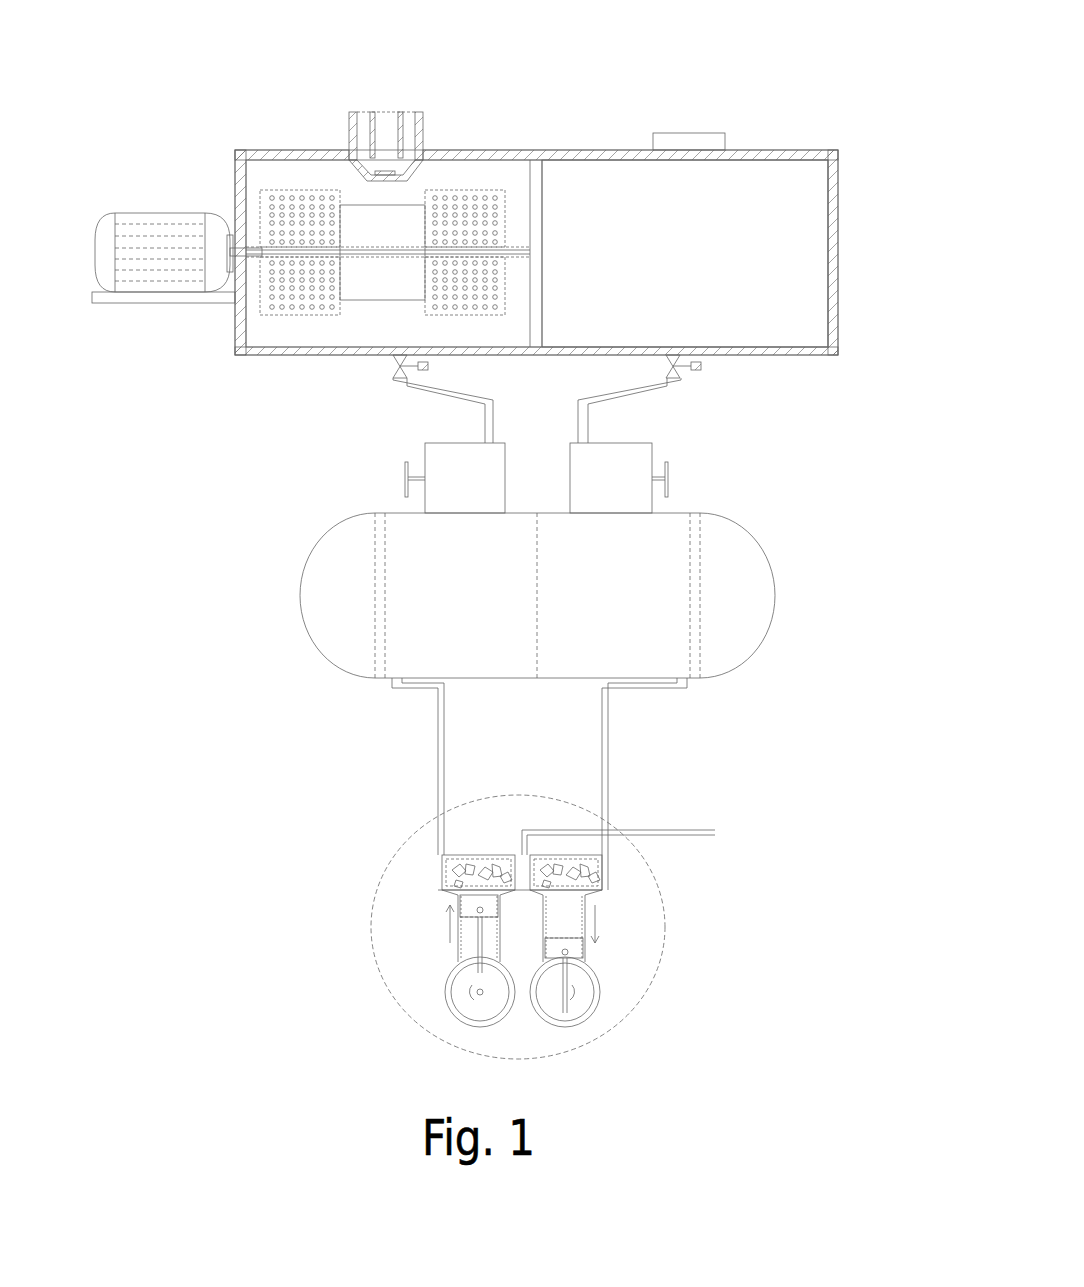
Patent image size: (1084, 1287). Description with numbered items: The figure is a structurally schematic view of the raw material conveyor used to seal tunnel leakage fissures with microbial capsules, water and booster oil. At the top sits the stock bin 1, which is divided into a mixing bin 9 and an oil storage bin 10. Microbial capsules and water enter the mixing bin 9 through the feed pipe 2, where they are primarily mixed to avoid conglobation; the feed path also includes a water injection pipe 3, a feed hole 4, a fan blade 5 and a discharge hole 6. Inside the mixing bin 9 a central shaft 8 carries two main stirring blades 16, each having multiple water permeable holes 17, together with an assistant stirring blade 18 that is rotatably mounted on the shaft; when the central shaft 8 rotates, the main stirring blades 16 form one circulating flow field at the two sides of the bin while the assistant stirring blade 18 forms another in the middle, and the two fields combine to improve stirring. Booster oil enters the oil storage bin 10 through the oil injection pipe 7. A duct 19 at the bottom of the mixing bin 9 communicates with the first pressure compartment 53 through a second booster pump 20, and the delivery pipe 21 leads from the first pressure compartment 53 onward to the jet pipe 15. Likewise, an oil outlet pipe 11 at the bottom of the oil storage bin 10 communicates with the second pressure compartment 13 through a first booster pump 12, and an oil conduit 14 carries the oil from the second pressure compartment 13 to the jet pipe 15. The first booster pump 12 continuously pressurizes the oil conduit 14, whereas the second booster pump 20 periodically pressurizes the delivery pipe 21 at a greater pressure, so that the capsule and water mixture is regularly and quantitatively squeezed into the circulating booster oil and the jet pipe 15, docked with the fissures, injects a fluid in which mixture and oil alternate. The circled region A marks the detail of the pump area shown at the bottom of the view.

The stock bin 1 is at (280, 152).
The feed pipe 2 is at (360, 115).
The water injection pipe 3 is at (416, 110).
The feed hole 4 is at (422, 126).
The fan blade 5 is at (395, 170).
The discharge hole 6 is at (410, 178).
The oil injection pipe 7 is at (660, 143).
The central shaft 8 is at (517, 252).
The mixing bin 9 is at (520, 290).
The oil storage bin 10 is at (770, 292).
The oil outlet pipe 11 is at (582, 412).
The first booster pump 12 is at (632, 492).
The second pressure compartment 13 is at (643, 580).
The oil conduit 14 is at (605, 753).
The jet pipe 15 is at (647, 828).
The main stirring blade 16 is at (242, 302).
The water permeable hole 17 is at (277, 315).
The assistant stirring blade 18 is at (373, 272).
The duct 19 is at (455, 395).
The second booster pump 20 is at (460, 467).
The delivery pipe 21 is at (440, 772).
The first pressure compartment 53 is at (428, 663).
The detail region A is at (662, 892).